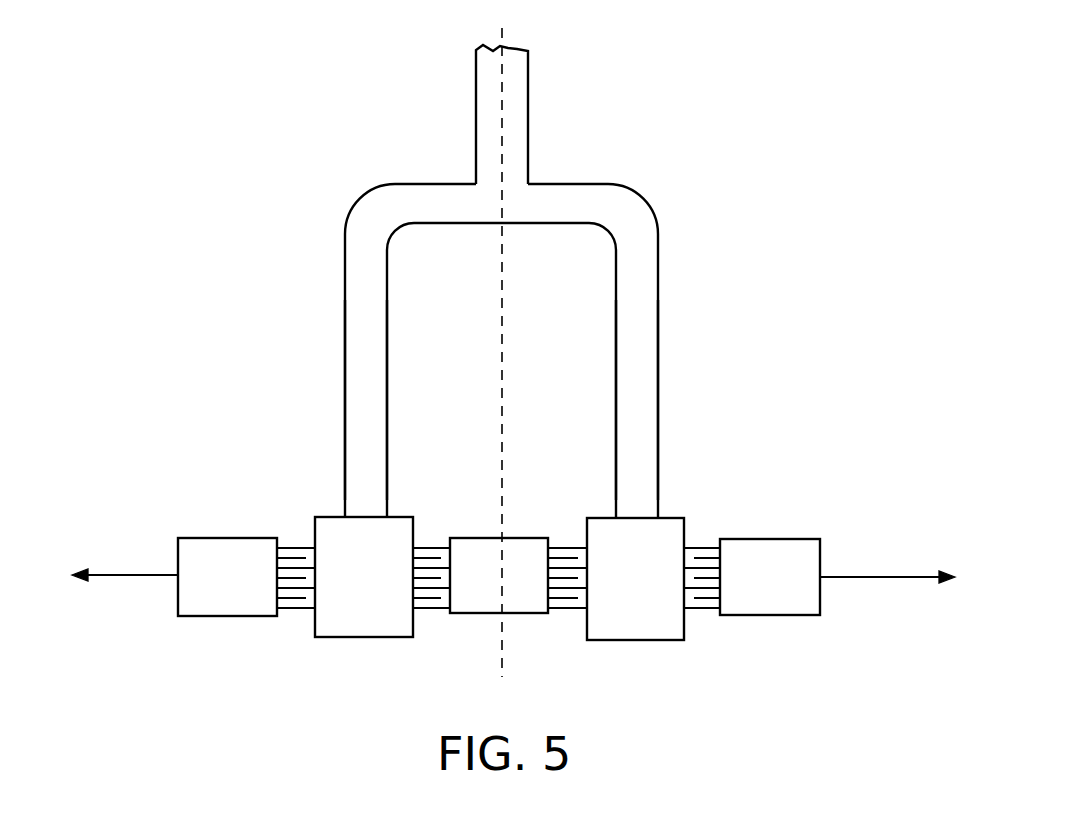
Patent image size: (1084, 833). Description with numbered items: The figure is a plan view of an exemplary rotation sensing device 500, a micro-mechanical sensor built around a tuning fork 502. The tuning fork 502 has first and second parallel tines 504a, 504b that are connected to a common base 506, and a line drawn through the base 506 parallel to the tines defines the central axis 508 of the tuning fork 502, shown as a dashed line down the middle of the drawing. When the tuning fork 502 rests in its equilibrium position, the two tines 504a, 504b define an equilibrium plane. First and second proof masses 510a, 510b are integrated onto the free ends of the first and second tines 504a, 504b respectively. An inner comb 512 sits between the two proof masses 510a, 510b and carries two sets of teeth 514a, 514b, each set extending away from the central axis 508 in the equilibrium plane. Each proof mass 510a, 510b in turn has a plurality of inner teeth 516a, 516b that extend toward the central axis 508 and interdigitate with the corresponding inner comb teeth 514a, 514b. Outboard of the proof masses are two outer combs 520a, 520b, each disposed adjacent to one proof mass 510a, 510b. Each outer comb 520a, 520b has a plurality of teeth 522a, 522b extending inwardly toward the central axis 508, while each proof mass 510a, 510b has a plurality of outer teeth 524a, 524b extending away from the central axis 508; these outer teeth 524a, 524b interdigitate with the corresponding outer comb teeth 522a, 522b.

The rotation sensing device 500 is at (605, 134).
The tuning fork 502 is at (637, 194).
The first tine 504a is at (313, 362).
The second tine 504b is at (658, 366).
The base 506 is at (476, 127).
The central axis 508 is at (502, 242).
The first proof mass 510a is at (364, 577).
The second proof mass 510b is at (604, 590).
The inner comb 512 is at (476, 590).
The inner comb teeth 514a is at (435, 547).
The inner comb teeth 514b is at (575, 548).
The inner teeth 516a is at (425, 607).
The inner teeth 516b is at (568, 608).
The first outer comb 520a is at (196, 590).
The second outer comb 520b is at (770, 577).
The outer comb teeth 522a is at (297, 547).
The outer comb teeth 522b is at (702, 547).
The outer teeth 524a is at (297, 607).
The outer teeth 524b is at (693, 607).